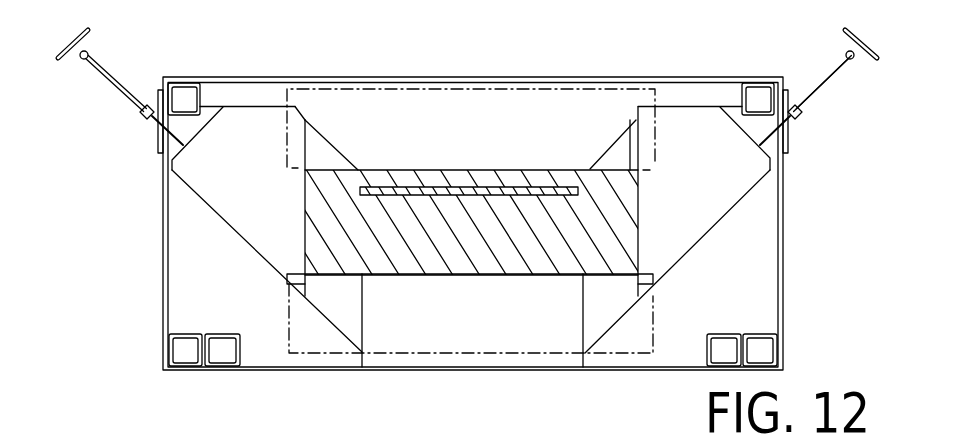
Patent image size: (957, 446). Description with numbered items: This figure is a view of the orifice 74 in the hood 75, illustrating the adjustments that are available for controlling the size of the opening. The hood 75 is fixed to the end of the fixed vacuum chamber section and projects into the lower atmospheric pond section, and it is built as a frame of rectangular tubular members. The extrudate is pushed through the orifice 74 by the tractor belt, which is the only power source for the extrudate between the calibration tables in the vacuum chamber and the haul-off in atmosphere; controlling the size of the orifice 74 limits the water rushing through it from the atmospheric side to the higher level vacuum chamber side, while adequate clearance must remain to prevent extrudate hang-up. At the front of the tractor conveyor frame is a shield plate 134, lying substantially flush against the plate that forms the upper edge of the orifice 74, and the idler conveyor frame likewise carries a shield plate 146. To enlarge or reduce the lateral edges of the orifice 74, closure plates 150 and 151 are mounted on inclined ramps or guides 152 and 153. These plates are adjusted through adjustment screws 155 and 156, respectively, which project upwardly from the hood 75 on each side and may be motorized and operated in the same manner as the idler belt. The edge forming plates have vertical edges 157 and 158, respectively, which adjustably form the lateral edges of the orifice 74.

The orifice 74 is at (674, 217).
The hood 75 is at (800, 272).
The shield plate 134 is at (655, 143).
The shield plate 146 is at (655, 313).
The closure plate 150 is at (224, 187).
The closure plate 151 is at (718, 180).
The inclined ramp 152 is at (242, 238).
The inclined ramp 153 is at (691, 255).
The adjustment screw 155 is at (121, 92).
The adjustment screw 156 is at (826, 83).
The vertical edge 157 is at (306, 150).
The vertical edge 158 is at (628, 134).